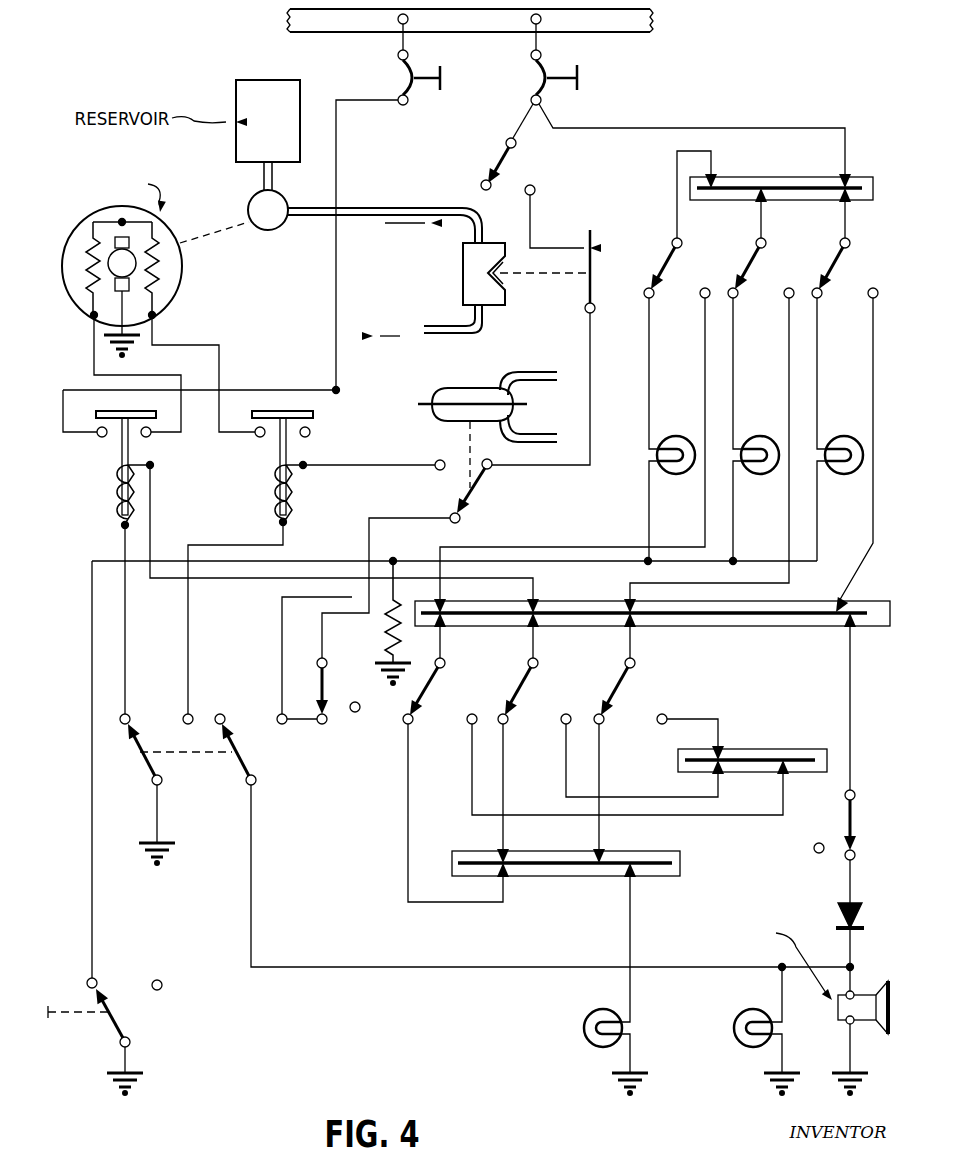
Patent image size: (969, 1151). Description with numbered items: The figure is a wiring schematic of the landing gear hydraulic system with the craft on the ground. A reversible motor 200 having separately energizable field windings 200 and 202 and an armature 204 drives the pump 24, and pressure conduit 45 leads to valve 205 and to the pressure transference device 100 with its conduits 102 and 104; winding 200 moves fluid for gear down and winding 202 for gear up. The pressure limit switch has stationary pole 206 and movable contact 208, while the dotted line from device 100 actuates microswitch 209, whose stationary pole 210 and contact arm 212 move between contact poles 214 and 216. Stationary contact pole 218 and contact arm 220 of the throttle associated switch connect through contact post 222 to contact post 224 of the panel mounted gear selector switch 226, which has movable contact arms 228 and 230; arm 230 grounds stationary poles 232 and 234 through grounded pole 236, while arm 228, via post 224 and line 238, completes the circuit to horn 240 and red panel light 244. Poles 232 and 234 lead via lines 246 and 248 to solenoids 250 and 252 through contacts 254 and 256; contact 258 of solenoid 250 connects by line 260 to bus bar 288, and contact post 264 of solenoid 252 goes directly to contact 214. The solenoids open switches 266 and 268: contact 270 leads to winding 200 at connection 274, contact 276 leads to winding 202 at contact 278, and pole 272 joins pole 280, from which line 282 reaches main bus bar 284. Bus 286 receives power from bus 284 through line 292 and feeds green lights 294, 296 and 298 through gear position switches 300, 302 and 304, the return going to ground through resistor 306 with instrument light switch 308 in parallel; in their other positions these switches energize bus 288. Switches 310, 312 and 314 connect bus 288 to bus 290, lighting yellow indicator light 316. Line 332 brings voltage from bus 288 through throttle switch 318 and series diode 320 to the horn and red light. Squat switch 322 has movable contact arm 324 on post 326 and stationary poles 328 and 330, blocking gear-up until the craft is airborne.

The pump 24 is at (248, 200).
The pressure conduit 45 is at (315, 218).
The pressure transference device 100 is at (488, 404).
The conduit 102 is at (540, 440).
The conduit 104 is at (533, 372).
The field winding 200 is at (137, 266).
The field winding 202 is at (158, 273).
The armature 204 is at (135, 258).
The valve 205 is at (452, 276).
The stationary pole 206 is at (550, 247).
The movable contact 208 is at (590, 276).
The microswitch 209 is at (457, 492).
The stationary pole 210 is at (492, 466).
The contact arm 212 is at (475, 490).
The contact pole 214 is at (440, 460).
The contact pole 216 is at (458, 520).
The stationary contact pole 218 is at (327, 661).
The contact arm 220 is at (341, 695).
The contact post 222 is at (324, 726).
The contact post 224 is at (284, 724).
The gear selector switch 226 is at (220, 774).
The movable contact arm 228 is at (243, 742).
The movable contact arm 230 is at (166, 734).
The stationary pole 232 is at (130, 714).
The stationary pole 234 is at (192, 714).
The grounded pole 236 is at (159, 786).
The line 238 is at (251, 894).
The horn 240 is at (840, 1013).
The red panel light 244 is at (730, 1023).
The line 246 is at (125, 650).
The line 248 is at (188, 650).
The solenoid 250 is at (102, 497).
The solenoid 252 is at (257, 492).
The contact 254 is at (113, 527).
The contact 256 is at (276, 524).
The contact 258 is at (154, 467).
The line 260 is at (150, 525).
The contact post 264 is at (305, 468).
The switch 266 is at (189, 433).
The switch 268 is at (293, 429).
The contact 270 is at (152, 439).
The contact 272 is at (100, 438).
The connection 274 is at (89, 318).
The contact 276 is at (258, 436).
The contact 278 is at (158, 317).
The pole 280 is at (312, 433).
The line 282 is at (338, 137).
The main bus bar 284 is at (640, 36).
The bus 286 is at (788, 182).
The bus bar 288 is at (721, 628).
The bus 290 is at (568, 877).
The line 292 is at (648, 128).
The green light 294 is at (679, 436).
The green light 296 is at (766, 436).
The green light 298 is at (844, 436).
The single pole, double throw switch 300 is at (672, 265).
The single pole, double throw switch 302 is at (765, 265).
The single pole, double throw switch 304 is at (847, 265).
The resistor 306 is at (397, 608).
The instrument light switch 308 is at (126, 1020).
The single pole, double throw switch 310 is at (426, 685).
The single pole, double throw switch 312 is at (523, 685).
The single pole, double throw switch 314 is at (620, 685).
The yellow indicator light 316 is at (584, 1028).
The throttle switch 318 is at (850, 812).
The series diode 320 is at (840, 912).
The squat switch 322 is at (499, 146).
The movable contact arm 324 is at (492, 160).
The post 326 is at (507, 138).
The stationary pole 328 is at (479, 182).
The stationary pole 330 is at (537, 190).
The line 332 is at (850, 712).